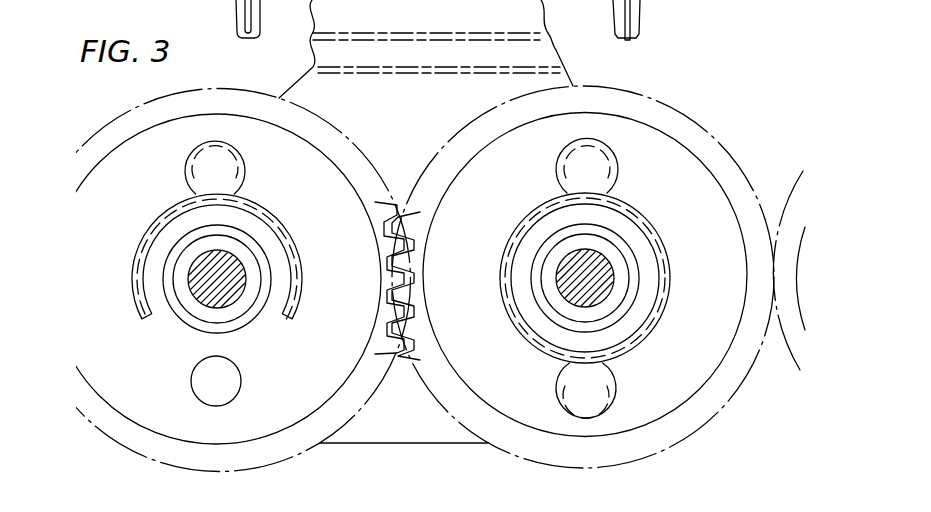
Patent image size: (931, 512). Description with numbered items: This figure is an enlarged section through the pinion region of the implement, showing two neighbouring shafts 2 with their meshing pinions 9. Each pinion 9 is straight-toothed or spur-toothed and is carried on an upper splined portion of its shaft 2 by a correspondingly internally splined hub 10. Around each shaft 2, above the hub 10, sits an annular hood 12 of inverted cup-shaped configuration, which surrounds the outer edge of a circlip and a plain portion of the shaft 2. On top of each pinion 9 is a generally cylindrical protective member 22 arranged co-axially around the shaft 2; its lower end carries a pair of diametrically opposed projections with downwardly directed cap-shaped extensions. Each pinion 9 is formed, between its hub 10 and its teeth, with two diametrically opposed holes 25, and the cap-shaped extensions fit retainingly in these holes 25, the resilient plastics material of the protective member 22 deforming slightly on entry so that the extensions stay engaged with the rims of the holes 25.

The shaft 2 is at (239, 304).
The pinion 9 is at (414, 198).
The hub 10 is at (173, 309).
The annular hood 12 is at (189, 314).
The protective member 22 is at (134, 246).
The holes 25 is at (241, 176).